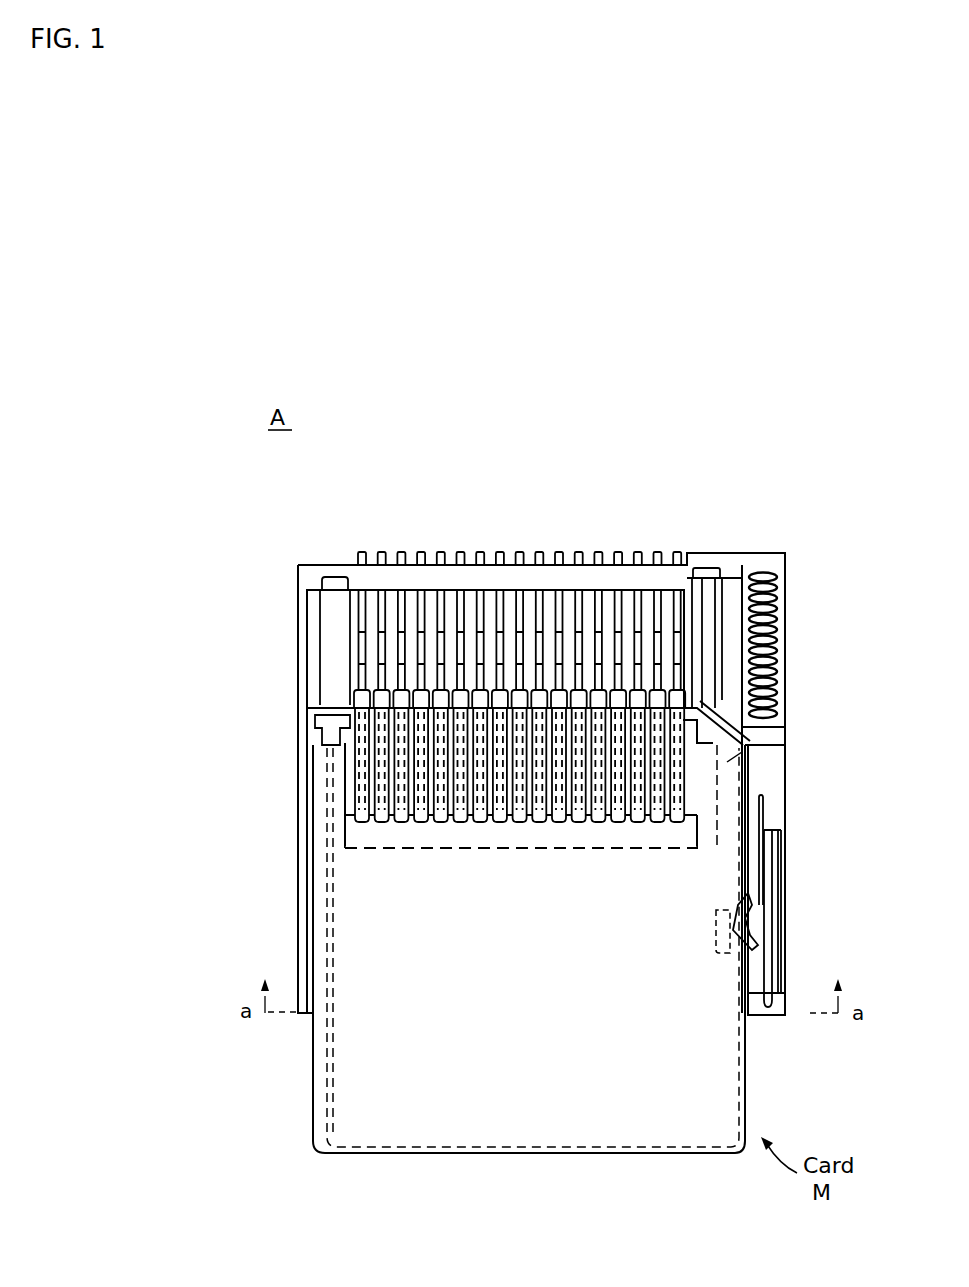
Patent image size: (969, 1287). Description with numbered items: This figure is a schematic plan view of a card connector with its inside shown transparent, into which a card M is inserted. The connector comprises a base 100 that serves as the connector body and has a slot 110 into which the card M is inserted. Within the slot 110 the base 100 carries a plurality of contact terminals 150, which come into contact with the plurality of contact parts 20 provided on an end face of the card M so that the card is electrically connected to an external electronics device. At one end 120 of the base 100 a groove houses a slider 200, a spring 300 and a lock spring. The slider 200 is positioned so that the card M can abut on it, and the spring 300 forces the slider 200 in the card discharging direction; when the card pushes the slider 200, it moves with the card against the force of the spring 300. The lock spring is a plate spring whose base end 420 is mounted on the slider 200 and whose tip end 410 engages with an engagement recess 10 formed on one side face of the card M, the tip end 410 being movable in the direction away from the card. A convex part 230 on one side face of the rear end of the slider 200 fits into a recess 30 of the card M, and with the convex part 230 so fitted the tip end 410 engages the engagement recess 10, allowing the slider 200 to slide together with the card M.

The engagement recess 10 is at (716, 935).
The contact parts 20 is at (499, 793).
The recess 30 is at (534, 810).
The base 100 is at (297, 552).
The slot 110 is at (306, 1018).
The one end 120 is at (790, 770).
The contact terminals 150 is at (679, 551).
The slider 200 is at (773, 790).
The convex part 230 is at (785, 753).
The spring 300 is at (786, 601).
The tip end 410 is at (740, 945).
The base end 420 is at (766, 812).